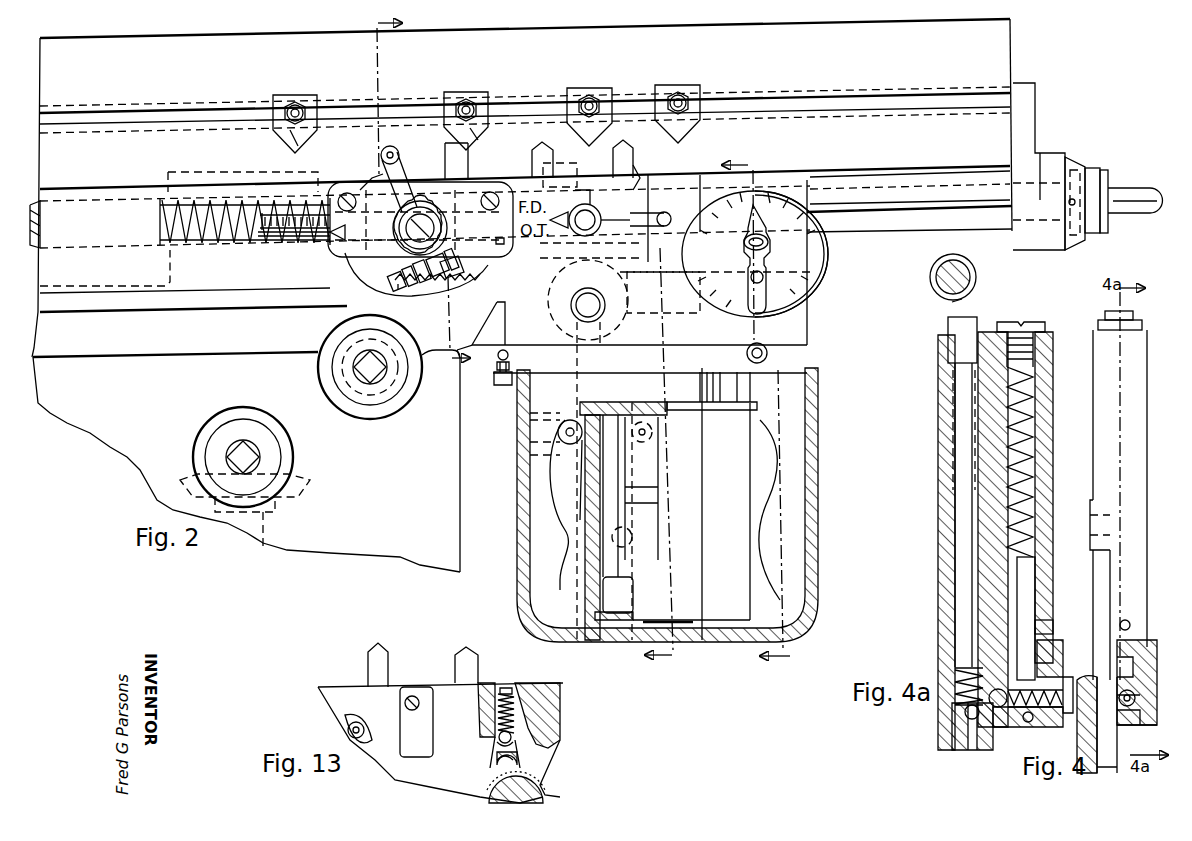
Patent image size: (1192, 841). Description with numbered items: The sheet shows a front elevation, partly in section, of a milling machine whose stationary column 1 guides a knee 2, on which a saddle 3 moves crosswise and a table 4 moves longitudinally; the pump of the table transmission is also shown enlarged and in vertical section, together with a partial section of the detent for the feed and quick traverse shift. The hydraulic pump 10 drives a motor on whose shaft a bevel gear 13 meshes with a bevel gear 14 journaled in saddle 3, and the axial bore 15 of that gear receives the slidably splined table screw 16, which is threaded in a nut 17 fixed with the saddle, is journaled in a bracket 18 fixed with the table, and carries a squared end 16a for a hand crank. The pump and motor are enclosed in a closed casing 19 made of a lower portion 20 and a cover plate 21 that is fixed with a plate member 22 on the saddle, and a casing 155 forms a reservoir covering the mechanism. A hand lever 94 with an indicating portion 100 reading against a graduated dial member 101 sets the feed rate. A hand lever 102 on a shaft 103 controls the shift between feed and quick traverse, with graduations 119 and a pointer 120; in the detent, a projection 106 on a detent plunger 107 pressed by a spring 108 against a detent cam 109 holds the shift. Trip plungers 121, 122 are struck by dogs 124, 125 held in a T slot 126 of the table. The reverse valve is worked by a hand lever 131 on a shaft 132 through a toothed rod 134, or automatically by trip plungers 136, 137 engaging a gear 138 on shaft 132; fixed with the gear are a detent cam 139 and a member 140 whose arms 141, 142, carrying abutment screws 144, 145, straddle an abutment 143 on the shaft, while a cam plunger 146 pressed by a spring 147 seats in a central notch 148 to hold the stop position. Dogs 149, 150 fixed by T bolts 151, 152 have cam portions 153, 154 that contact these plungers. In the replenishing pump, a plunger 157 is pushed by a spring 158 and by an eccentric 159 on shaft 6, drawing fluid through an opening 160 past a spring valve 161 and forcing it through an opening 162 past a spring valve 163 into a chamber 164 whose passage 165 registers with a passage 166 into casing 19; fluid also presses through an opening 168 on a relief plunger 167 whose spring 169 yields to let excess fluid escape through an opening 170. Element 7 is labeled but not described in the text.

In FIG. 2, the column 1 is at (663, 462).
In FIG. 2, the knee 2 is at (254, 430).
In FIG. 2, the saddle 3 is at (808, 342).
In FIG. 13, the saddle 3 is at (519, 728).
In FIG. 2, the table 4 is at (1011, 55).
In FIG. 2, the shaft 6 is at (571, 307).
In FIG. 4A, the shaft 6 is at (977, 279).
In FIG. 2, the cam arm 7 is at (495, 315).
In FIG. 2, the pump 10 is at (411, 193).
In FIG. 2, the bevel gear 13 is at (659, 217).
In FIG. 2, the bevel gear 14 is at (636, 172).
In FIG. 2, the axial bore 15 is at (582, 192).
In FIG. 2, the table screw 16 is at (152, 250).
In FIG. 2, the squared end 16a is at (1125, 188).
In FIG. 2, the nut 17 is at (226, 188).
In FIG. 2, the bracket 18 is at (1040, 130).
In FIG. 2, the casing 19 is at (592, 576).
In FIG. 4, the casing 19 is at (1082, 677).
In FIG. 2, the lower portion 20 is at (597, 613).
In FIG. 2, the cover plate 21 is at (587, 401).
In FIG. 2, the plate member 22 is at (490, 380).
In FIG. 2, the hand lever 94 is at (748, 285).
In FIG. 2, the indicating portion 100 is at (760, 210).
In FIG. 2, the graduated dial member 101 is at (822, 282).
In FIG. 2, the hand lever 102 is at (632, 216).
In FIG. 2, the shaft 103 is at (580, 232).
In FIG. 13, the projection 106 is at (498, 737).
In FIG. 13, the detent plunger 107 is at (520, 755).
In FIG. 13, the spring 108 is at (510, 700).
In FIG. 13, the detent cam 109 is at (498, 772).
In FIG. 2, the lettering or graduations 119 is at (550, 187).
In FIG. 2, the indicator or pointer 120 is at (570, 209).
In FIG. 2, the trip plunger 121 is at (533, 150).
In FIG. 2, the trip plunger 122 is at (624, 150).
In FIG. 2, the dog 124 is at (590, 88).
In FIG. 2, the dog 125 is at (680, 85).
In FIG. 2, the T slot 126 is at (246, 109).
In FIG. 2, the hand lever 131 is at (394, 157).
In FIG. 2, the shaft 132 is at (424, 205).
In FIG. 2, the rod 134 is at (520, 323).
In FIG. 2, the trip plunger 136 is at (366, 178).
In FIG. 2, the trip plunger 137 is at (462, 163).
In FIG. 2, the gear 138 is at (452, 192).
In FIG. 2, the detent cam 139 is at (375, 268).
In FIG. 2, the member 140 is at (500, 236).
In FIG. 2, the arm 141 is at (404, 284).
In FIG. 2, the arm 142 is at (465, 283).
In FIG. 2, the pin or abutment 143 is at (440, 278).
In FIG. 2, the abutment screw 144 is at (382, 308).
In FIG. 2, the abutment screw 145 is at (512, 233).
In FIG. 2, the cam plunger 146 is at (320, 238).
In FIG. 2, the spring 147 is at (290, 230).
In FIG. 2, the central notch 148 is at (352, 262).
In FIG. 2, the dog 149 is at (470, 92).
In FIG. 2, the dog 150 is at (295, 95).
In FIG. 2, the T bolt 151 is at (302, 107).
In FIG. 2, the T bolt 152 is at (460, 104).
In FIG. 2, the cam portion 153 is at (298, 138).
In FIG. 2, the cam portion 154 is at (480, 132).
In FIG. 2, the casing 155 is at (818, 560).
In FIG. 4A, the plunger 157 is at (948, 328).
In FIG. 4, the plunger 157 is at (1108, 310).
In FIG. 4A, the spring 158 is at (945, 448).
In FIG. 4A, the eccentric 159 is at (942, 302).
In FIG. 4A, the opening 160 is at (973, 750).
In FIG. 4A, the spring valve 161 is at (952, 733).
In FIG. 4A, the opening 162 is at (975, 690).
In FIG. 4A, the spring valve 163 is at (1002, 708).
In FIG. 4A, the chamber 164 is at (1033, 722).
In FIG. 4A, the passage 165 is at (1027, 728).
In FIG. 4, the passage 165 is at (1138, 728).
In FIG. 4, the passage 166 is at (1119, 707).
In FIG. 4A, the spring pressed plunger 167 is at (1033, 592).
In FIG. 4A, the opening 168 is at (1068, 677).
In FIG. 4A, the plunger spring 169 is at (1040, 455).
In FIG. 4A, the opening 170 is at (1045, 625).
In FIG. 4, the opening 170 is at (1130, 614).